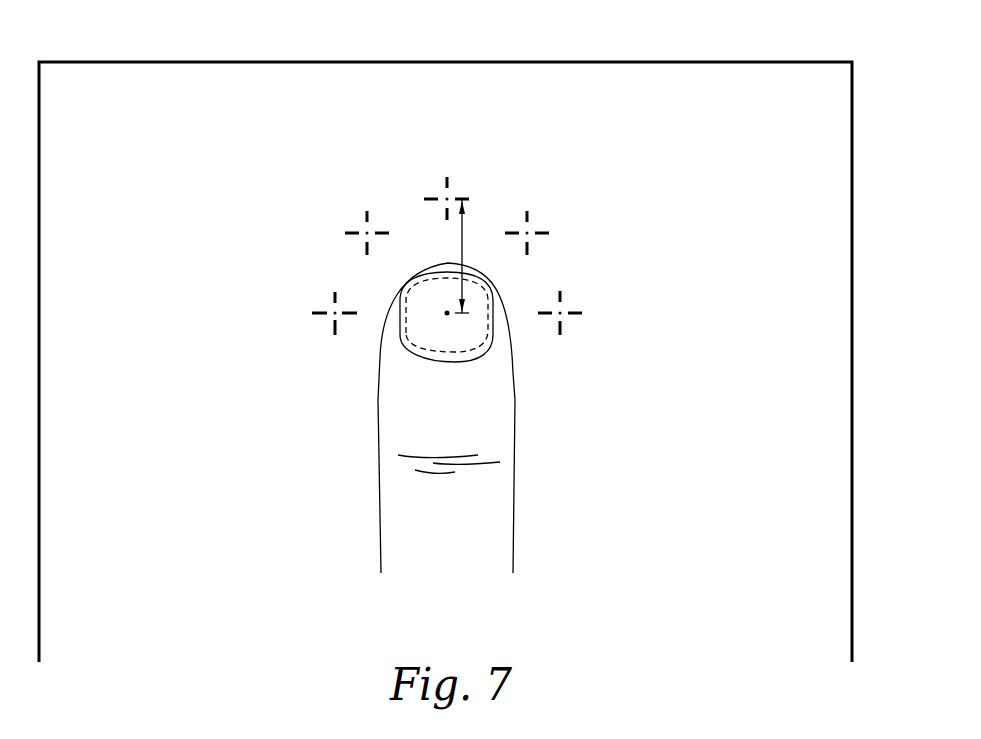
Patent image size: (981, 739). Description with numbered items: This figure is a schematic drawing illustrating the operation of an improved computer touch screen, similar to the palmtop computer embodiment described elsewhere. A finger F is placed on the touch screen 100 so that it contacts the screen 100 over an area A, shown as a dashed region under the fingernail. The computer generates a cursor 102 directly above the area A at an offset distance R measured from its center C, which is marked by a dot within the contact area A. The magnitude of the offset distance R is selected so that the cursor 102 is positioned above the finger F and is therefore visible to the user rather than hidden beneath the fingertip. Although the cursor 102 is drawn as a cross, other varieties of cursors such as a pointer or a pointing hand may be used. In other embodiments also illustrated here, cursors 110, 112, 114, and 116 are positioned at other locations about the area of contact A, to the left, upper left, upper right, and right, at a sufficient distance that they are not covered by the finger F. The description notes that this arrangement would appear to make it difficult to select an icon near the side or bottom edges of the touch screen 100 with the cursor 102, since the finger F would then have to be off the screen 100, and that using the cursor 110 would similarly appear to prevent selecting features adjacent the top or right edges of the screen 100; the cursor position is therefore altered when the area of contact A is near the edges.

The touch screen 100 is at (673, 126).
The cursor 102 is at (446, 198).
The cursor 110 is at (334, 316).
The cursor 112 is at (366, 232).
The cursor 114 is at (528, 232).
The cursor 116 is at (561, 311).
The offset distance R is at (460, 248).
The area A is at (413, 350).
The center C is at (447, 316).
The finger F is at (513, 385).